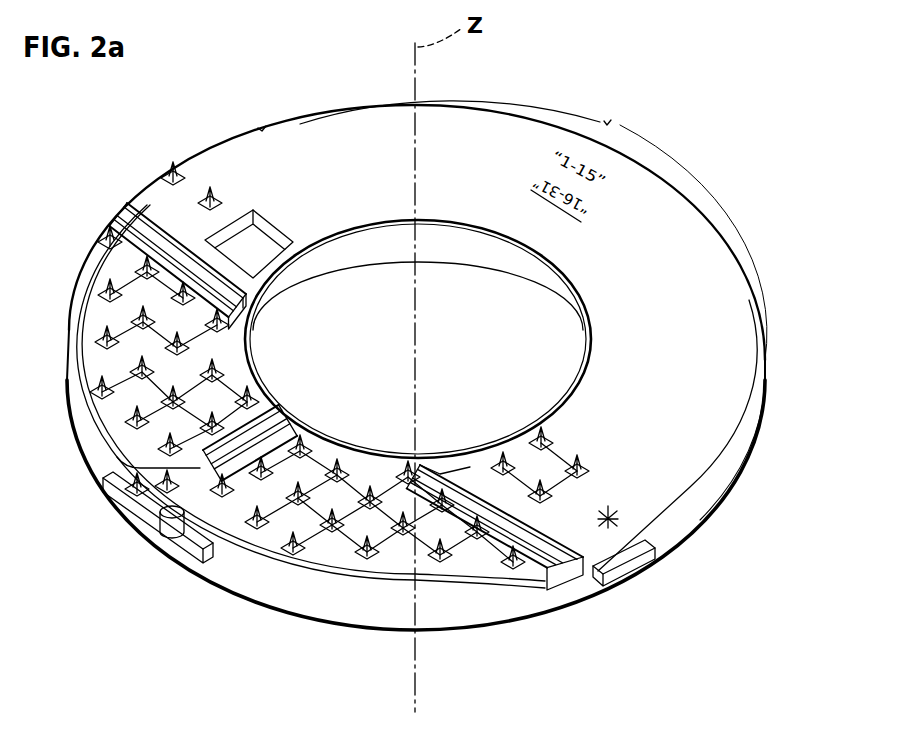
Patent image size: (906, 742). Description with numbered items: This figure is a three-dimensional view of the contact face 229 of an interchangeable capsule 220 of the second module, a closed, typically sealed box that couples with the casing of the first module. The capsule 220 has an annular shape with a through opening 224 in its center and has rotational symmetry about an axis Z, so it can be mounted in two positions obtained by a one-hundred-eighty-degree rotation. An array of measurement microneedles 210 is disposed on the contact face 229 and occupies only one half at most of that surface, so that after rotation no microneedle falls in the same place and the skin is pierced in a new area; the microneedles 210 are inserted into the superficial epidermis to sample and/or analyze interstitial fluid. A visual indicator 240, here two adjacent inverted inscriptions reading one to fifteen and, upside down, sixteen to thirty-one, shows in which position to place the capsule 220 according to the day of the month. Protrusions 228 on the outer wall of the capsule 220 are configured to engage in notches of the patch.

The measurement microneedles 210 is at (108, 280).
The capsule 220 is at (708, 131).
The through opening 224 is at (475, 361).
The protrusions 228 is at (633, 567).
The contact face 229 is at (690, 361).
The visual indicator 240 is at (664, 220).